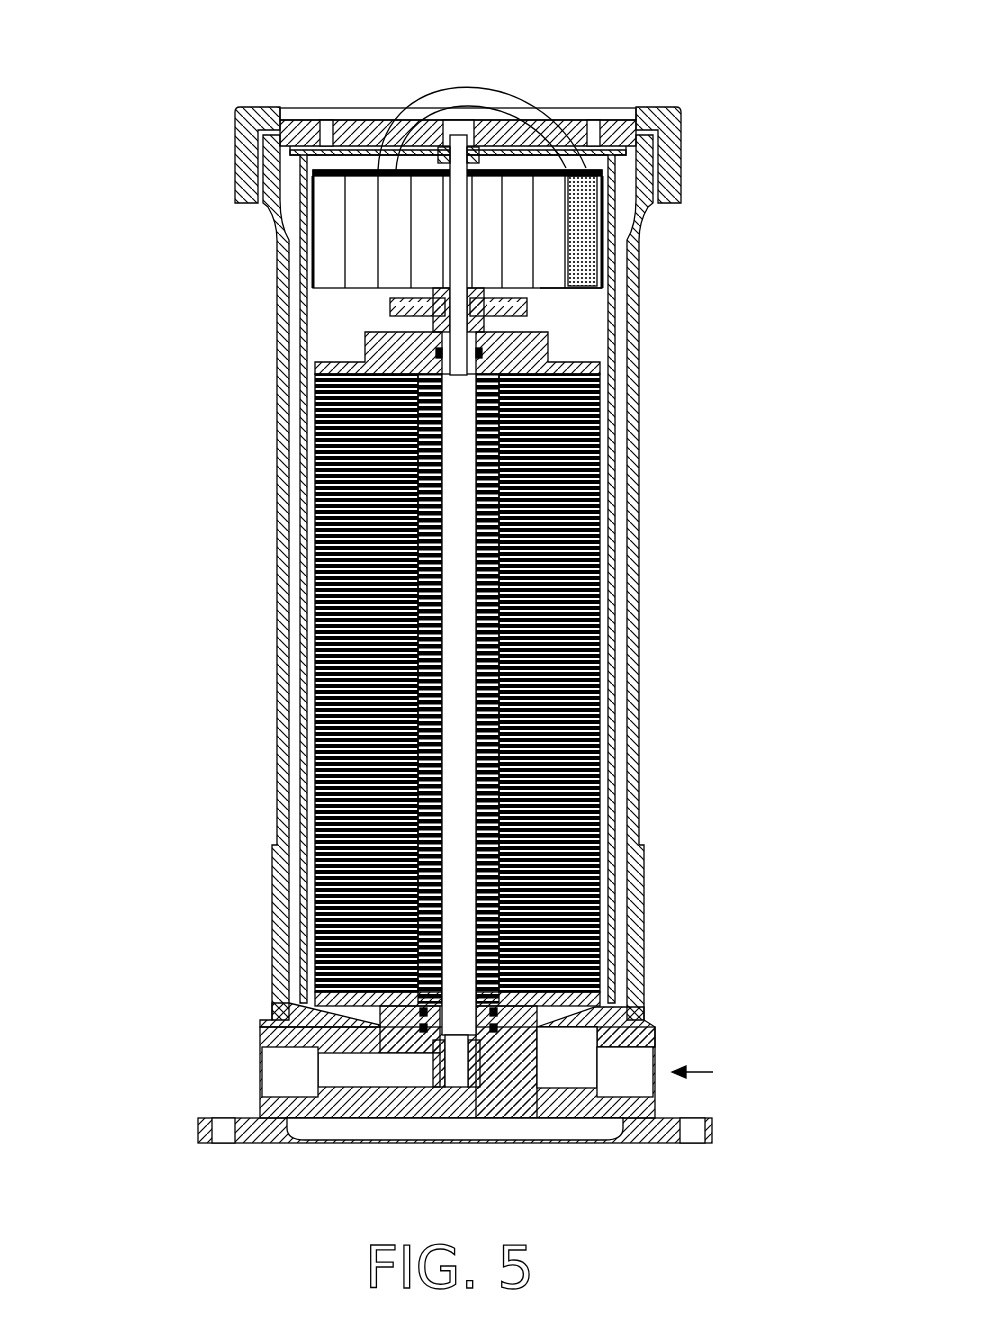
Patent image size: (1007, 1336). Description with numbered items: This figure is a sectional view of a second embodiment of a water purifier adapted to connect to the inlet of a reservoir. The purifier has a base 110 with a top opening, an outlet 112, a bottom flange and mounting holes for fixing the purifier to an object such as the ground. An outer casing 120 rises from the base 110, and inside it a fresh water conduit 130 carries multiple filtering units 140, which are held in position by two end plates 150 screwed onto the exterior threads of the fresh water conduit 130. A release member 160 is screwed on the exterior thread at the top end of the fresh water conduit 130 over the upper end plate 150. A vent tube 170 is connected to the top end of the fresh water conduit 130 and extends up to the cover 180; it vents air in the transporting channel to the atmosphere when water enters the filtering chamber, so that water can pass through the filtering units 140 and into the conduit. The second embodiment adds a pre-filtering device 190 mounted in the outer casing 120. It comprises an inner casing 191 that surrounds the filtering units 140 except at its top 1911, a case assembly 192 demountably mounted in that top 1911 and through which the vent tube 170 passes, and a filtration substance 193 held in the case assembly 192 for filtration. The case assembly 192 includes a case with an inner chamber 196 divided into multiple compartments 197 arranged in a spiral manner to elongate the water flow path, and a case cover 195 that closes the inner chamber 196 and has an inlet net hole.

The base 110 is at (258, 1024).
The outlet 112 is at (270, 1072).
The outer casing 120 is at (637, 682).
The fresh water conduit 130 is at (452, 615).
The filtering units 140 is at (600, 527).
The end plates 150 is at (359, 336).
The release member 160 is at (535, 311).
The vent tube 170 is at (456, 135).
The cover 180 is at (228, 171).
The pre-filtering device 190 is at (313, 240).
The inner casing 191 is at (303, 765).
The top 1911 is at (627, 117).
The case assembly 192 is at (590, 286).
The filtration substance 193 is at (585, 235).
The case cover 195 is at (388, 170).
The inner chamber 196 is at (333, 268).
The compartments 197 is at (505, 215).